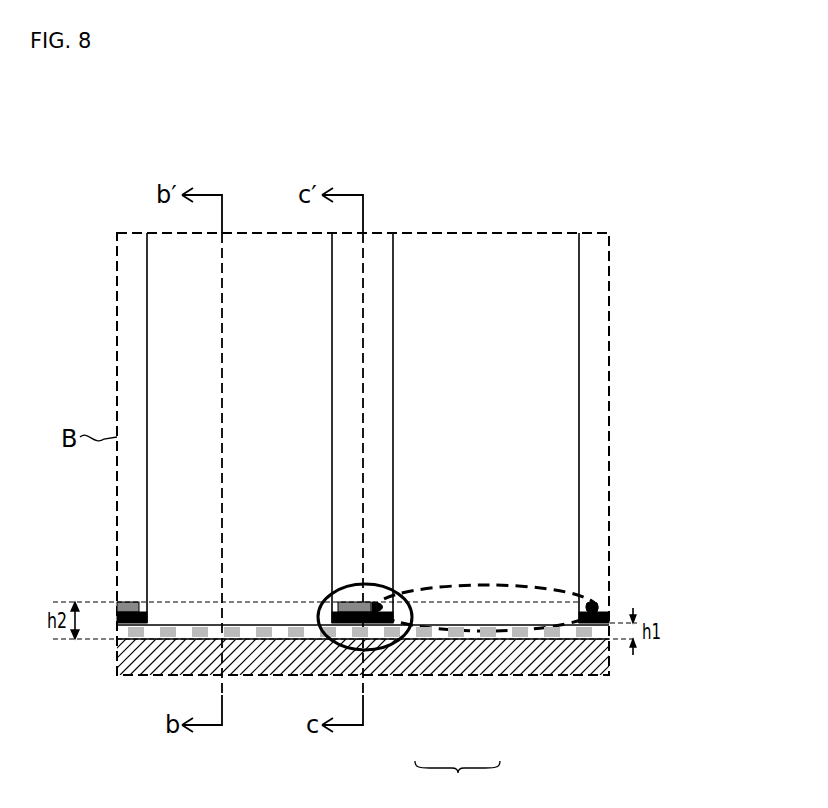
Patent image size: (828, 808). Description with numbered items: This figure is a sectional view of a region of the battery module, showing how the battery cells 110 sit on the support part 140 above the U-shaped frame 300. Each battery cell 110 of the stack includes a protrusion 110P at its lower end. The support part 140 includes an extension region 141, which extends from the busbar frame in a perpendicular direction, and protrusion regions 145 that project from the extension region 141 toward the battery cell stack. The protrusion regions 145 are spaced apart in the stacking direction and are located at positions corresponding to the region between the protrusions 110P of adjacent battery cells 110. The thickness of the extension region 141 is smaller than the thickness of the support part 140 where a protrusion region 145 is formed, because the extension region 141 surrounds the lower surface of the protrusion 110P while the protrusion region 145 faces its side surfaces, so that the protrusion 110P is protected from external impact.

The battery cell 110 is at (495, 260).
The protrusion 110P is at (497, 612).
The support part 140 is at (457, 780).
The extension region 141 is at (558, 632).
The protrusion region 145 is at (372, 623).
The U-shaped frame 300 is at (583, 663).